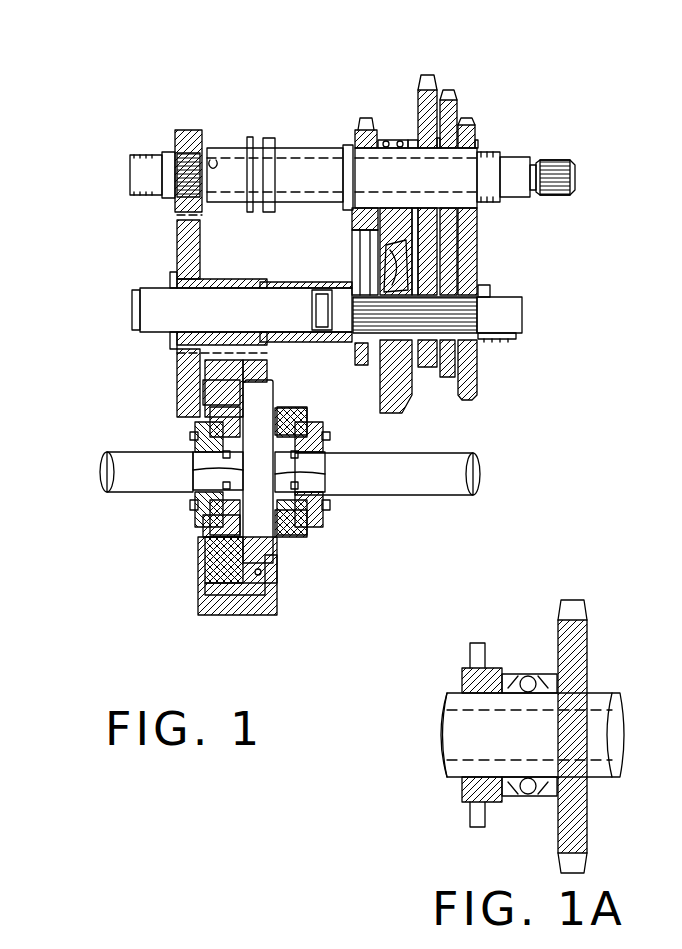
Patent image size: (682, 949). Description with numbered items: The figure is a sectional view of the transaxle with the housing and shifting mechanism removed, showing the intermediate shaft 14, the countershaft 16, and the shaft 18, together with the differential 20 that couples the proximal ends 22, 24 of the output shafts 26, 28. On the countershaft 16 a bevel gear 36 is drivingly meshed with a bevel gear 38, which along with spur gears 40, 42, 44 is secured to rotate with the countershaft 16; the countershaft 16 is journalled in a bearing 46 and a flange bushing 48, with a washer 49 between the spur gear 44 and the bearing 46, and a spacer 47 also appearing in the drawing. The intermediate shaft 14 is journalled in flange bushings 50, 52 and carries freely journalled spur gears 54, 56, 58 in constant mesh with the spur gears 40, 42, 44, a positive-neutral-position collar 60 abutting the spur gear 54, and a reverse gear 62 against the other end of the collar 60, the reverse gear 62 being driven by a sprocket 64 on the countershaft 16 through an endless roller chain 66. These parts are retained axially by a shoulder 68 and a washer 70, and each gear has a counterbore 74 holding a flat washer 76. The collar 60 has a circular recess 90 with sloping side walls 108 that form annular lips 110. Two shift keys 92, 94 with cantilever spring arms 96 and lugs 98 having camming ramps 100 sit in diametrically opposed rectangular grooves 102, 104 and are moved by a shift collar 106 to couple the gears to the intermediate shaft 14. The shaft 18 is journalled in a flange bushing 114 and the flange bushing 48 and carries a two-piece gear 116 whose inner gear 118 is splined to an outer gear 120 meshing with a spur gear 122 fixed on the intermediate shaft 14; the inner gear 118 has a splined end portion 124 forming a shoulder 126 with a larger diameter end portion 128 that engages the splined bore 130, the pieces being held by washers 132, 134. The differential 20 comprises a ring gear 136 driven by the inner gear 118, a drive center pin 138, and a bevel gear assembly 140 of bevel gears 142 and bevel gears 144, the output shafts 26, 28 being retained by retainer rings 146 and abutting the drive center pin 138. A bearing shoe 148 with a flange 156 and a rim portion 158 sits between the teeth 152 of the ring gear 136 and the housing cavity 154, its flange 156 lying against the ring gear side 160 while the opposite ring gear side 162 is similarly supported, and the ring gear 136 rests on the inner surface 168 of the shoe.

In FIG. 1, the intermediate shaft 14 is at (226, 165).
In FIG. 1A, the intermediate shaft 14 is at (605, 745).
In FIG. 1, the countershaft 16 is at (510, 315).
In FIG. 1, the shaft 18 is at (150, 312).
In FIG. 1, the differential 20 is at (128, 596).
In FIG. 1, the proximal end 22 is at (200, 480).
In FIG. 1, the proximal end 24 is at (300, 490).
In FIG. 1, the output shaft 26 is at (110, 462).
In FIG. 1, the output shaft 28 is at (470, 485).
In FIG. 1, the bevel gear 36 is at (330, 347).
In FIG. 1, the bevel gear 38 is at (388, 395).
In FIG. 1, the spur gear 40 is at (428, 367).
In FIG. 1, the spur gear 42 is at (447, 377).
In FIG. 1, the spur gear 44 is at (470, 398).
In FIG. 1, the bearing 46 is at (512, 339).
In FIG. 1, the gear hub 47 is at (420, 385).
In FIG. 1, the flange bushing 48 is at (322, 290).
In FIG. 1, the washer 49 is at (482, 285).
In FIG. 1, the flange bushing 50 is at (150, 155).
In FIG. 1, the flange bushing 52 is at (540, 160).
In FIG. 1, the spur gear 54 is at (427, 75).
In FIG. 1A, the spur gear 54 is at (575, 608).
In FIG. 1, the spur gear 56 is at (448, 90).
In FIG. 1, the spur gear 58 is at (475, 122).
In FIG. 1, the positive-neutral-position collar 60 is at (385, 140).
In FIG. 1A, the positive-neutral-position collar 60 is at (505, 677).
In FIG. 1, the reverse gear 62 is at (365, 118).
In FIG. 1A, the reverse gear 62 is at (470, 655).
In FIG. 1, the sprocket 64 is at (362, 365).
In FIG. 1, the endless roller chain 66 is at (345, 262).
In FIG. 1, the shoulder 68 is at (346, 145).
In FIG. 1, the washer 70 is at (492, 152).
In FIG. 1, the counterbore 74 is at (412, 138).
In FIG. 1, the flat washer 76 is at (470, 149).
In FIG. 1, the circular recess 90 is at (426, 215).
In FIG. 1A, the circular recess 90 is at (524, 676).
In FIG. 1, the shift key 92 is at (272, 138).
In FIG. 1, the shift key 94 is at (254, 212).
In FIG. 1, the cantilever spring arm 96 is at (322, 192).
In FIG. 1, the lug 98 is at (406, 149).
In FIG. 1, the camming ramp 100 is at (399, 147).
In FIG. 1, the rectangular groove 102 is at (213, 158).
In FIG. 1A, the rectangular groove 102 is at (592, 708).
In FIG. 1, the rectangular groove 104 is at (212, 194).
In FIG. 1A, the rectangular groove 104 is at (592, 765).
In FIG. 1, the shift collar 106 is at (250, 137).
In FIG. 1, the sloping side wall 108 is at (372, 272).
In FIG. 1A, the sloping side wall 108 is at (545, 678).
In FIG. 1, the annular lip 110 is at (383, 149).
In FIG. 1A, the annular lip 110 is at (502, 700).
In FIG. 1, the flange bushing 114 is at (138, 290).
In FIG. 1, the two-piece gear 116 is at (160, 238).
In FIG. 1, the inner gear 118 is at (225, 290).
In FIG. 1, the outer gear 120 is at (182, 380).
In FIG. 1, the spur gear 122 is at (183, 130).
In FIG. 1, the splined end portion 124 is at (177, 304).
In FIG. 1, the shoulder 126 is at (190, 262).
In FIG. 1, the larger diameter end portion 128 is at (303, 312).
In FIG. 1, the splined bore 130 is at (176, 268).
In FIG. 1, the washer 132 is at (172, 346).
In FIG. 1, the washer 134 is at (270, 280).
In FIG. 1, the ring gear 136 is at (205, 596).
In FIG. 1, the drive center pin 138 is at (272, 552).
In FIG. 1, the bevel gear assembly 140 is at (182, 525).
In FIG. 1, the bevel gear 142 is at (190, 435).
In FIG. 1, the bevel gear 144 is at (288, 408).
In FIG. 1, the retainer ring 146 is at (200, 470).
In FIG. 1, the bearing shoe 148 is at (234, 612).
In FIG. 1, the teeth 152 is at (225, 598).
In FIG. 1, the cavity 154 is at (272, 575).
In FIG. 1, the flange 156 is at (210, 580).
In FIG. 1, the rim portion 158 is at (255, 612).
In FIG. 1, the ring gear side 160 is at (215, 555).
In FIG. 1, the ring gear side 162 is at (268, 588).
In FIG. 1, the inner surface 168 is at (270, 610).